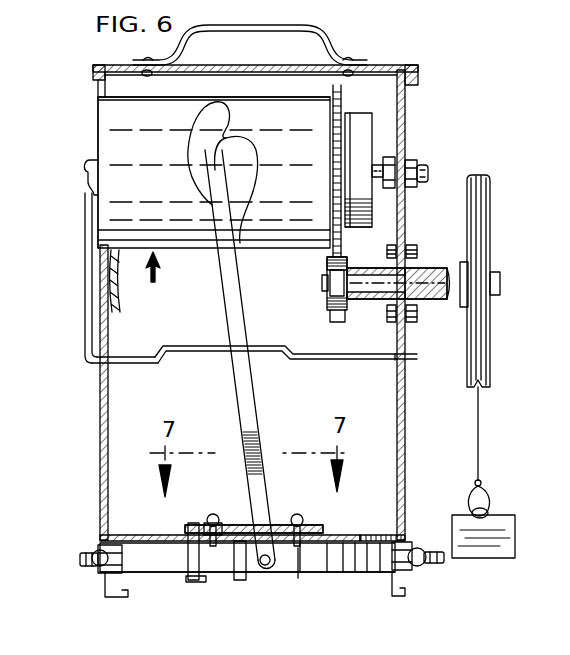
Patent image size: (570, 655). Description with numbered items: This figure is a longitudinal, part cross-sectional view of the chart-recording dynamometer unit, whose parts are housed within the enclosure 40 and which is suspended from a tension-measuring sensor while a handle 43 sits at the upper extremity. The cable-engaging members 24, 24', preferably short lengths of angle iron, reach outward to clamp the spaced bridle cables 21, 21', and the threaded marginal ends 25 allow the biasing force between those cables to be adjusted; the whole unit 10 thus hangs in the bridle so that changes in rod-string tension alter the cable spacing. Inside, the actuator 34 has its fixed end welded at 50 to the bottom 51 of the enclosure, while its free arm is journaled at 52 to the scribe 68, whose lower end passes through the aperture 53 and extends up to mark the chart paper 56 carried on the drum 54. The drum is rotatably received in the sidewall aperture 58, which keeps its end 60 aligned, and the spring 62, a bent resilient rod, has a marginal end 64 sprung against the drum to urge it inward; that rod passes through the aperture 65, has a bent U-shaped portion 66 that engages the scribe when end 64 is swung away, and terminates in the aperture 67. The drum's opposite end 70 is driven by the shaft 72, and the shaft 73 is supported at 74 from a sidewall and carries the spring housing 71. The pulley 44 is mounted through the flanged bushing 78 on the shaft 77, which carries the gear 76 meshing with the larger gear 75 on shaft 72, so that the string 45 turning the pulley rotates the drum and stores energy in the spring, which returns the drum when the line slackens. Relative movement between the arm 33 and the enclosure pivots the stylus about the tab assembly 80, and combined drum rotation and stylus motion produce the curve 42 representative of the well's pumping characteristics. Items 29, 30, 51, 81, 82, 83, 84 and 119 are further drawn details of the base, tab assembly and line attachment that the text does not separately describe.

The power lifting device 10 is at (70, 576).
The cable 21 is at (434, 607).
The cable 21' is at (89, 596).
The cable-engaging member 24 is at (438, 575).
The cable-engaging member 24' is at (77, 540).
The threaded marginal end 25 is at (443, 560).
The pin 29 is at (298, 580).
The foot 30 is at (202, 596).
The arm 33 is at (347, 578).
The actuator 34 is at (148, 575).
The enclosure 40 is at (432, 47).
The curve 42 is at (186, 132).
The handle 43 is at (325, 42).
The pulley 44 is at (472, 173).
The string 45 is at (477, 410).
The weld 50 is at (182, 568).
The bottom 51 is at (351, 575).
The journal 52 is at (268, 568).
The aperture 53 is at (242, 545).
The drum 54 is at (155, 282).
The chart paper 56 is at (107, 215).
The aperture 58 is at (120, 297).
The end of the drum 60 is at (103, 118).
The spring 62 is at (87, 178).
The marginal end 64 is at (87, 292).
The aperture 65 is at (105, 363).
The bent U-shaped portion 66 is at (195, 354).
The aperture 67 is at (398, 362).
The scribe 68 is at (257, 399).
The end of the drum 70 is at (345, 140).
The spring housing 71 is at (357, 113).
The shaft 72 is at (348, 183).
The shaft 73 is at (377, 183).
The support 74 is at (405, 157).
The gear 75 is at (330, 254).
The gear 76 is at (335, 311).
The shaft 77 is at (323, 284).
The flanged bushing 78 is at (372, 292).
The tab assembly 80 is at (340, 512).
The clamp bar 81 is at (282, 524).
The bracket 82 is at (208, 524).
The plate 83 is at (191, 528).
The bolt 84 is at (214, 517).
The hook 119 is at (452, 520).